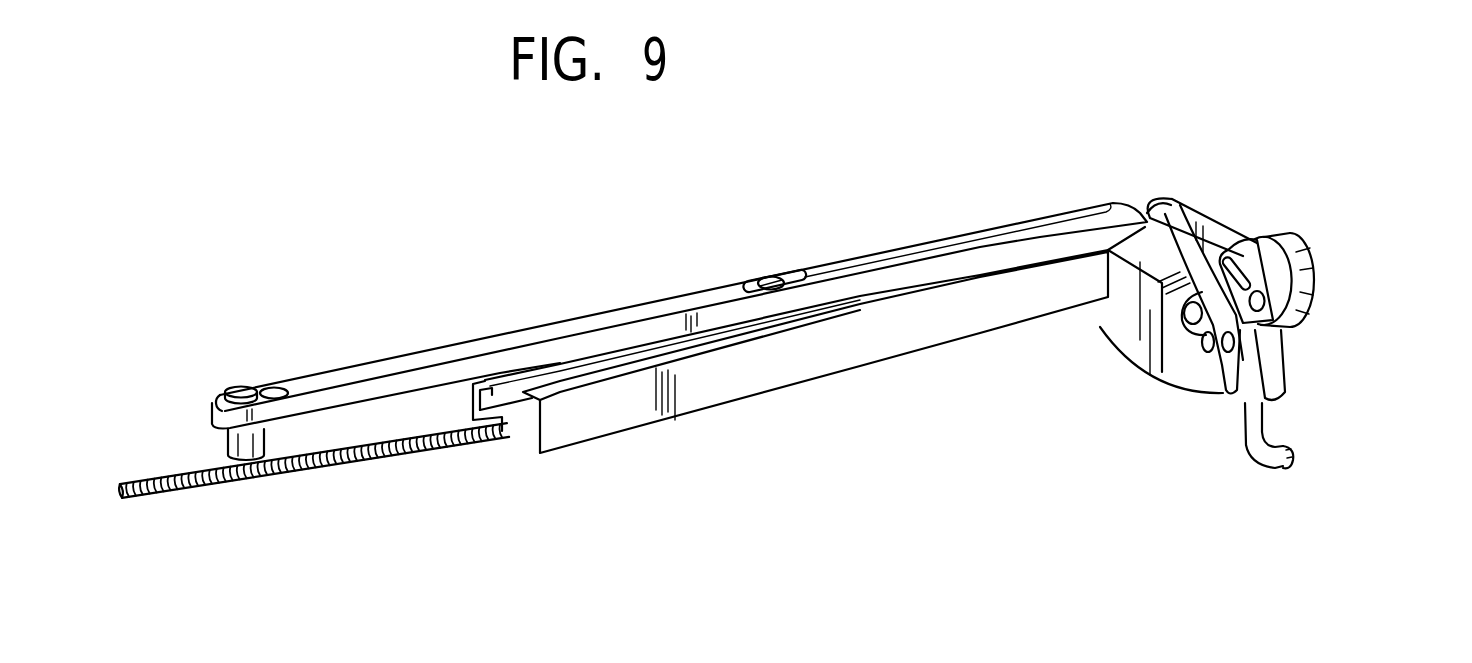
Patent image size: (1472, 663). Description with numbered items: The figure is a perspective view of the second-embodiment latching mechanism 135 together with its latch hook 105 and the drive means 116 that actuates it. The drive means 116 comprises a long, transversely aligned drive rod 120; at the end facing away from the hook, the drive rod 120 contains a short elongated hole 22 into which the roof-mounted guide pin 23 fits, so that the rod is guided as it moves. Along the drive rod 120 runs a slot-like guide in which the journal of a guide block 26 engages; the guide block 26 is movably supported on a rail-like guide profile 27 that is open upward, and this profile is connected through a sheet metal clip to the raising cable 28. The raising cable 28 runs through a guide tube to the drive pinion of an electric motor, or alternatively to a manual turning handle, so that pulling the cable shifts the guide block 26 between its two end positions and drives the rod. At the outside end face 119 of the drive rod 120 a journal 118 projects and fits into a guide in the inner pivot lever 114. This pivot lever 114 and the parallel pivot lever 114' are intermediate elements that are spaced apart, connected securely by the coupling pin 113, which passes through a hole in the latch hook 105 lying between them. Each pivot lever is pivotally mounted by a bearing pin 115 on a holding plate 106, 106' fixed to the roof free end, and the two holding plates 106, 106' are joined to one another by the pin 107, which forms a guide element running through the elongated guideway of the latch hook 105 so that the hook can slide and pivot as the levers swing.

The short elongated hole 22 is at (275, 387).
The guide pin 23 is at (243, 386).
The guide block 26 is at (773, 276).
The guide profile 27 is at (697, 395).
The raising cable 28 is at (373, 462).
The latch hook 105 is at (1245, 447).
The holding plate 106 is at (1123, 332).
The holding plate 106' is at (1202, 164).
The pin 107 is at (1214, 393).
The pin 113 is at (1313, 300).
The pivot lever 114 is at (1285, 199).
The pivot lever 114' is at (1335, 216).
The bearing pin 115 is at (1207, 365).
The drive means 116 is at (534, 474).
The journal 118 is at (1190, 348).
The outside end face 119 is at (1163, 198).
The drive rod 120 is at (613, 312).
The latching mechanism 135 is at (1320, 250).